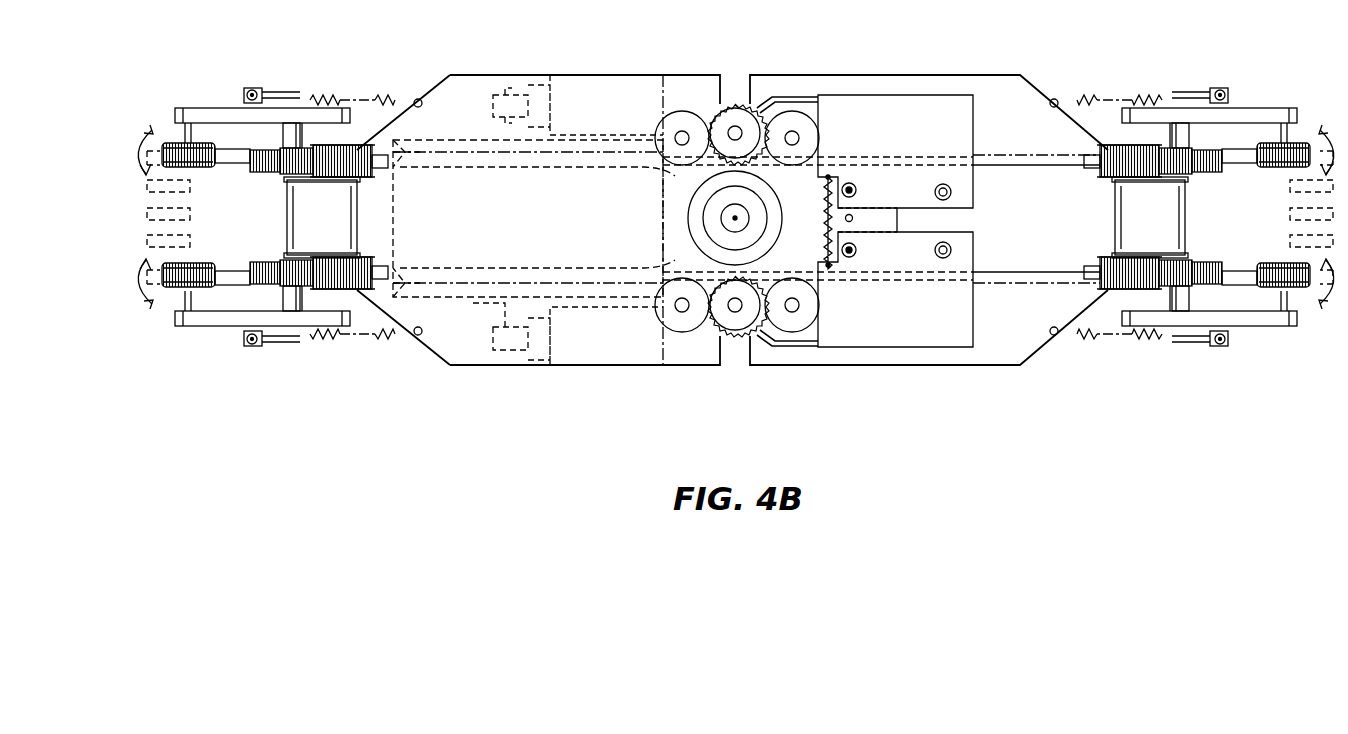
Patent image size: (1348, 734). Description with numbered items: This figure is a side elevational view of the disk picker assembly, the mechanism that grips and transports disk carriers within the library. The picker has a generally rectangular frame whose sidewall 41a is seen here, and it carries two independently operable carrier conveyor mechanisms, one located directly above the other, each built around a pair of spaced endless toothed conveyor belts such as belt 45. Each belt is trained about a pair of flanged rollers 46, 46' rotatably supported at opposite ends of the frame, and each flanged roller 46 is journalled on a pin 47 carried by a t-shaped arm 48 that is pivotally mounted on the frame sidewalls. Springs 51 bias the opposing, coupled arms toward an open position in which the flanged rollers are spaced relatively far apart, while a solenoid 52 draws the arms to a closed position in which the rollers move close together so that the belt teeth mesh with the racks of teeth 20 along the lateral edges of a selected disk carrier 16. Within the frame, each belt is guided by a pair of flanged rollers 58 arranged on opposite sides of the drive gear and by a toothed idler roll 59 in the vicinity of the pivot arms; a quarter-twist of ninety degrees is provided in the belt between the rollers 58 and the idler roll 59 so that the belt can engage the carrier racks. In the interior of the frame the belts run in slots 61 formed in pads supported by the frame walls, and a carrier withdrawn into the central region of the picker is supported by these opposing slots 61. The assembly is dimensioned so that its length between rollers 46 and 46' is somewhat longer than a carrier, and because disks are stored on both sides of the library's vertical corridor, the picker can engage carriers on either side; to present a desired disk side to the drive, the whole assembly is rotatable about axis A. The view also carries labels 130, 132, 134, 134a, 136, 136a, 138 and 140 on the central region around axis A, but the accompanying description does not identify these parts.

The disk carrier 16 is at (1340, 329).
The rack of teeth 20 is at (208, 190).
The frame sidewall 41a is at (982, 135).
The conveyor belt 45 is at (1076, 268).
The flanged roller 46 is at (1258, 215).
The flanged roller 46' is at (210, 215).
The pin 47 is at (1280, 300).
The t-shaped arm 48 is at (1262, 327).
The spring 51 is at (1132, 338).
The solenoid 52 is at (576, 340).
The flanged roller 58 is at (686, 318).
The toothed idler roll 59 is at (371, 258).
The slot 61 is at (402, 266).
The gear 130 is at (735, 338).
The bracket 132 is at (783, 97).
The housing block 134 is at (871, 140).
The screw 134a is at (858, 190).
The housing block 136 is at (871, 330).
The screw 136a is at (858, 248).
The latch 138 is at (897, 218).
The spring 140 is at (827, 222).
The axis A is at (733, 216).